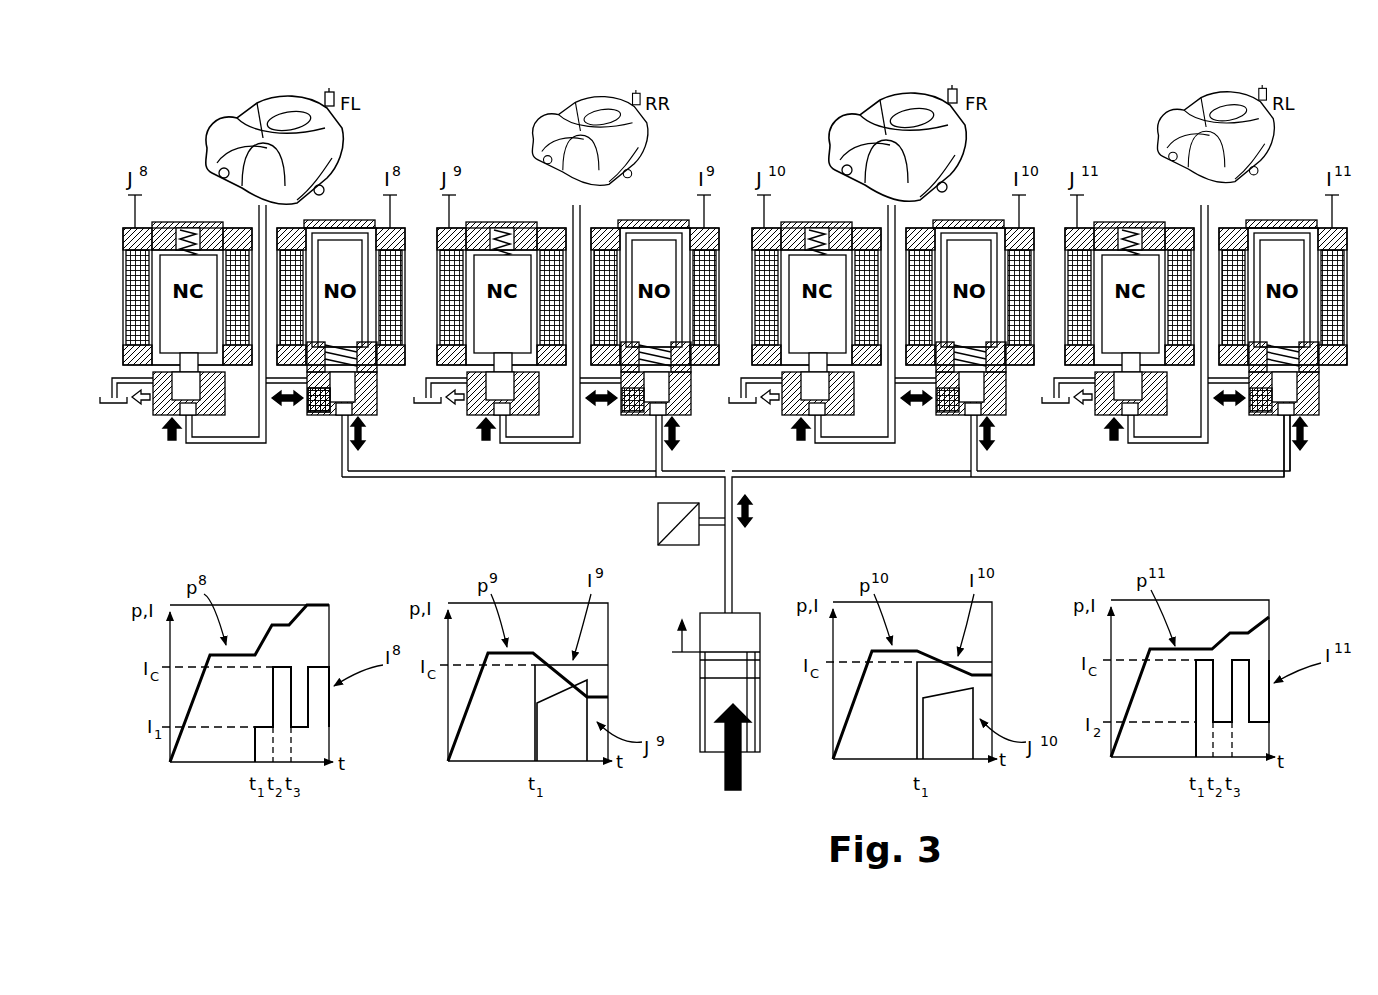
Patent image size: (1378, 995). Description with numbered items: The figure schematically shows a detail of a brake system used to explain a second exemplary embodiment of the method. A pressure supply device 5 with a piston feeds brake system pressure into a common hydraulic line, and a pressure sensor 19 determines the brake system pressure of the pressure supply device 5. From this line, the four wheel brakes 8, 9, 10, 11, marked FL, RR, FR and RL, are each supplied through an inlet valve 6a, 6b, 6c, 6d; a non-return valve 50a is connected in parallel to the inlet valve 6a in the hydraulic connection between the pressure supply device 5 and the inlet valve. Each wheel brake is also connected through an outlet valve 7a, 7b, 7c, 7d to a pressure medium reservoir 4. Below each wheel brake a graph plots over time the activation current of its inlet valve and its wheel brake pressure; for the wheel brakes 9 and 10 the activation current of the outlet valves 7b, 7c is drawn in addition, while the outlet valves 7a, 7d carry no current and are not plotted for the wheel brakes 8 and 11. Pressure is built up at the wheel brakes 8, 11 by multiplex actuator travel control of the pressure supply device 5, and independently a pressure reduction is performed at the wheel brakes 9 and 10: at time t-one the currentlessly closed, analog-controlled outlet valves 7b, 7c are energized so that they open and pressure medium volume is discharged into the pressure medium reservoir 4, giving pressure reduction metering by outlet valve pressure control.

The pressure medium reservoir 4 is at (118, 410).
The pressure supply device 5 is at (712, 765).
The inlet valve 6a is at (355, 220).
The inlet valve 6b is at (669, 220).
The inlet valve 6c is at (984, 220).
The inlet valve 6d is at (1297, 220).
The outlet valve 7a is at (165, 222).
The outlet valve 7b is at (479, 222).
The outlet valve 7c is at (794, 222).
The outlet valve 7d is at (1107, 222).
The wheel brake 8 is at (228, 100).
The wheel brake 9 is at (545, 98).
The wheel brake 10 is at (852, 98).
The wheel brake 11 is at (1172, 96).
The pressure sensor 19 is at (658, 525).
The non-return valve 50a is at (310, 414).